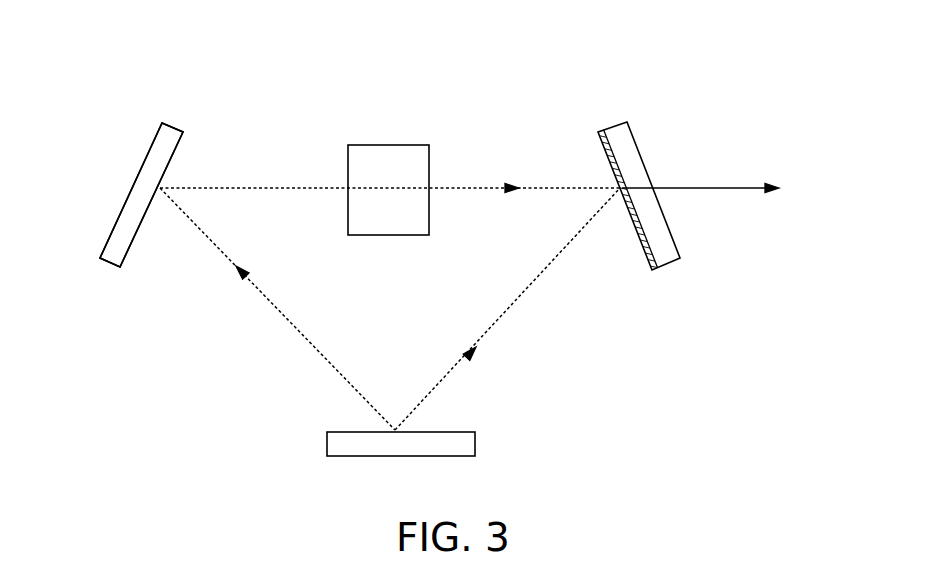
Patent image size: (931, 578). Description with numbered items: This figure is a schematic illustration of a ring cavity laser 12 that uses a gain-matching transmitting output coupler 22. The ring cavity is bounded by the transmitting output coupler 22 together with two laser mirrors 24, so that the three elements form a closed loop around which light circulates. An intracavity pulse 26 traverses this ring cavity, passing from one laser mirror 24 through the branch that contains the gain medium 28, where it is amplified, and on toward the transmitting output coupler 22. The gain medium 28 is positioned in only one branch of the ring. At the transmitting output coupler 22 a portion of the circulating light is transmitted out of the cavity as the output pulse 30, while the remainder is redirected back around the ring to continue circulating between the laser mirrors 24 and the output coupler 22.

The ring cavity laser 12 is at (136, 110).
The transmitting output coupler 22 is at (628, 165).
The laser mirrors 24 is at (127, 230).
The intracavity pulse 26 is at (252, 187).
The gain medium 28 is at (386, 165).
The output pulse 30 is at (727, 187).